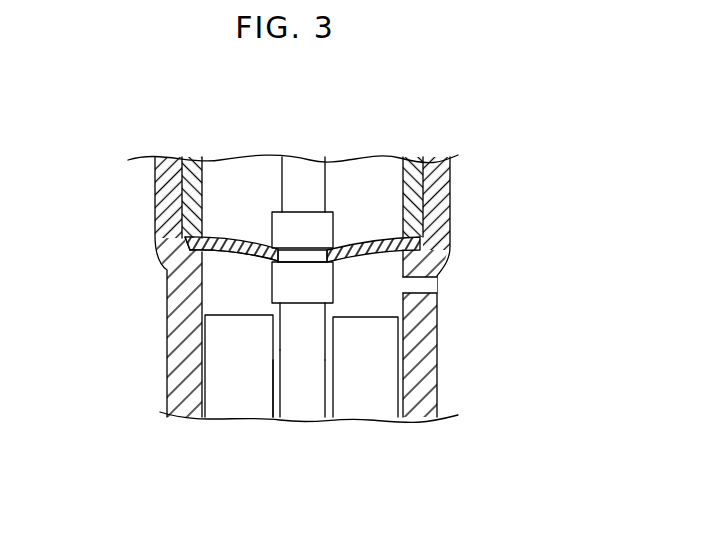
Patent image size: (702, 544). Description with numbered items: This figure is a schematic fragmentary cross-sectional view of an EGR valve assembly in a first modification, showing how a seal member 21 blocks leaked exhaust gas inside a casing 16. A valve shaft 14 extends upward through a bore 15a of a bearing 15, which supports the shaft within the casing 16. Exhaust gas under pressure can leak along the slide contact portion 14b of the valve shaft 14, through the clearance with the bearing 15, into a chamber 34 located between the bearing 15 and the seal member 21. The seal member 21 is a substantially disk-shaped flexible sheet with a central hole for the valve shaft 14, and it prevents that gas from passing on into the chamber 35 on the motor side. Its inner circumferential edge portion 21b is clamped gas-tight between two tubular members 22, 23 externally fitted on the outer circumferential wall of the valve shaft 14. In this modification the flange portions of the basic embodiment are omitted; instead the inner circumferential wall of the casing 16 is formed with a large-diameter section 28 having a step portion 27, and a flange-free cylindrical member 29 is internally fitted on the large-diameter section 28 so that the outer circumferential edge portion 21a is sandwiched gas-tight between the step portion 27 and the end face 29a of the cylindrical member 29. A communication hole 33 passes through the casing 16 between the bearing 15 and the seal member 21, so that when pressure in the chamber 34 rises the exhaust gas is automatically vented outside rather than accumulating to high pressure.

The valve shaft 14 is at (305, 413).
The slide contact portion 14b is at (330, 366).
The bearing 15 is at (382, 374).
The bore 15a is at (278, 366).
The casing 16 is at (450, 175).
The seal member 21 is at (236, 239).
The outer circumferential edge portion 21a is at (188, 252).
The inner circumferential edge portion 21b is at (273, 258).
The tubular member 22 is at (333, 285).
The tubular member 23 is at (335, 226).
The step portion 27 is at (426, 225).
The large-diameter section 28 is at (412, 165).
The cylindrical member 29 is at (185, 160).
The end face 29a is at (184, 238).
The communication hole 33 is at (438, 284).
The chamber 34 is at (361, 283).
The chamber 35 is at (362, 223).